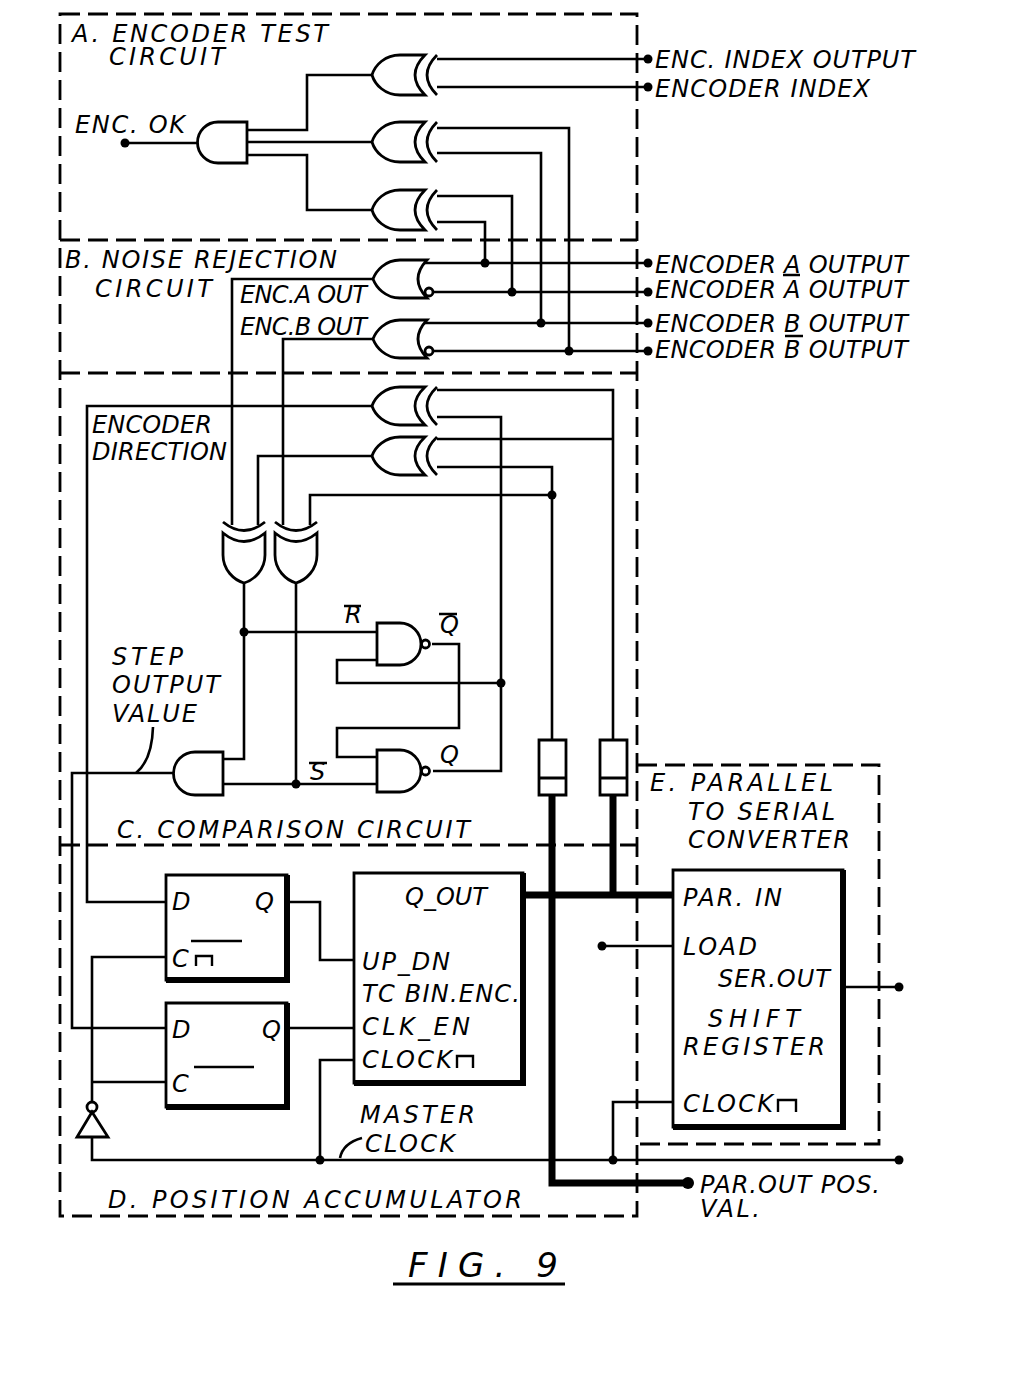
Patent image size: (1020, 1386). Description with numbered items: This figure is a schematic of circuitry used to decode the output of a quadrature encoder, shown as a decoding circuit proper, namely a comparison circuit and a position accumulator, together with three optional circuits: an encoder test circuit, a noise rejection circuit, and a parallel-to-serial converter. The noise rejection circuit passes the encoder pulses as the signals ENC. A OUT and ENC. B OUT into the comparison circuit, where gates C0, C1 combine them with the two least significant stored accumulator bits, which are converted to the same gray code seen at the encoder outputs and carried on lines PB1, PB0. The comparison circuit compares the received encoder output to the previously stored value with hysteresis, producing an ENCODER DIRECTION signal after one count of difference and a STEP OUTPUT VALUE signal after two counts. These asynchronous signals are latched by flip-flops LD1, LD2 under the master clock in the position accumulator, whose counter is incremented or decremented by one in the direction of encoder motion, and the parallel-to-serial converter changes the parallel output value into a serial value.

The XOR gate C0 is at (387, 401).
The XOR gate C1 is at (387, 451).
The pull-up resistor PB1 is at (535, 708).
The pull-up resistor PB0 is at (591, 708).
The D flip-flop LD1 is at (226, 927).
The D flip-flop LD2 is at (226, 1055).